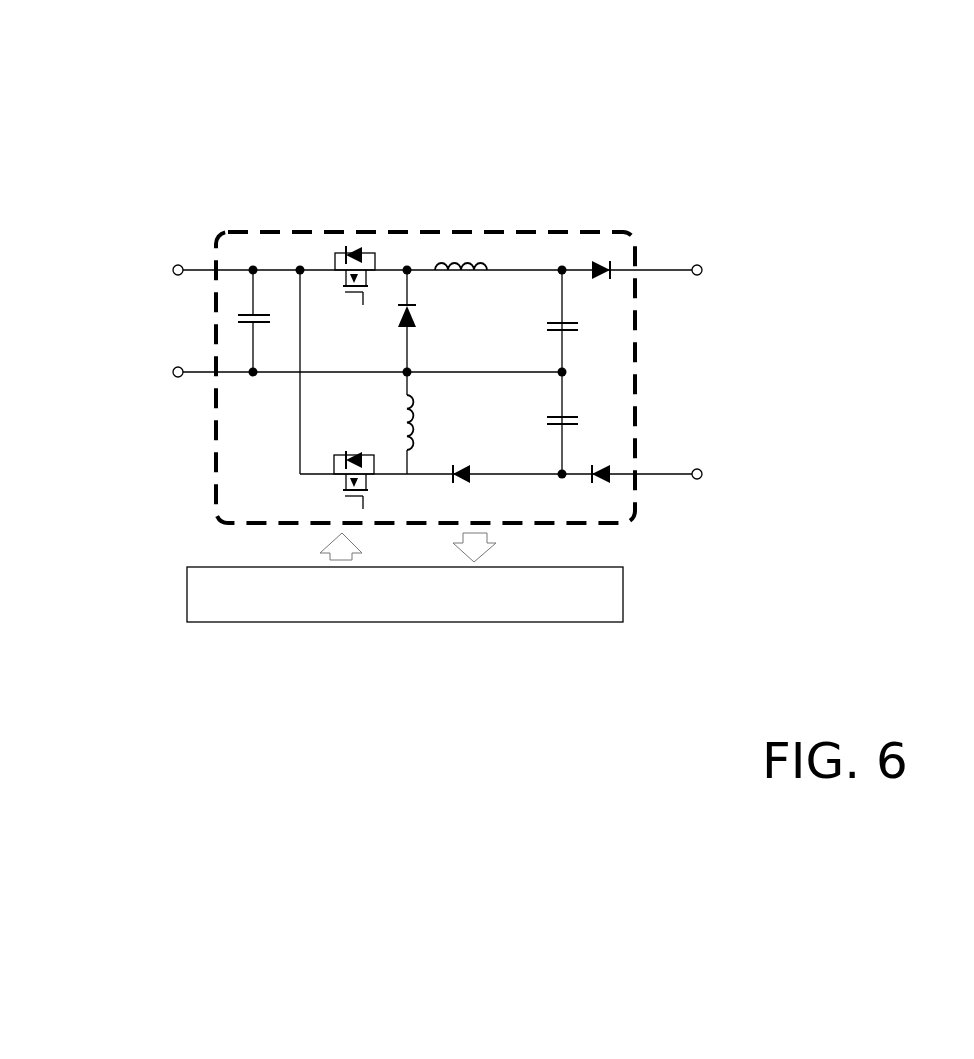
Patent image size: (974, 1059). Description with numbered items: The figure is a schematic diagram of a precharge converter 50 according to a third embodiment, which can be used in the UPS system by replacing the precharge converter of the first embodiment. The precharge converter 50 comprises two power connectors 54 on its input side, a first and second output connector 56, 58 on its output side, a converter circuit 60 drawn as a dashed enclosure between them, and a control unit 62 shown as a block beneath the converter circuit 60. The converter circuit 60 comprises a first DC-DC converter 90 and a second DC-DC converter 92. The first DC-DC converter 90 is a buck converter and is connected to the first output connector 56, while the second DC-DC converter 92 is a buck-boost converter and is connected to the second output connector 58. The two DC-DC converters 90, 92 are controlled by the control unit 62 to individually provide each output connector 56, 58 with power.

The precharge converter 50 is at (745, 175).
The power connectors 54 is at (178, 366).
The first output connector 56 is at (697, 265).
The second output connector 58 is at (696, 469).
The converter circuit 60 is at (543, 225).
The control unit 62 is at (363, 605).
The first DC-DC converter 90 is at (393, 247).
The second DC-DC converter 92 is at (383, 420).